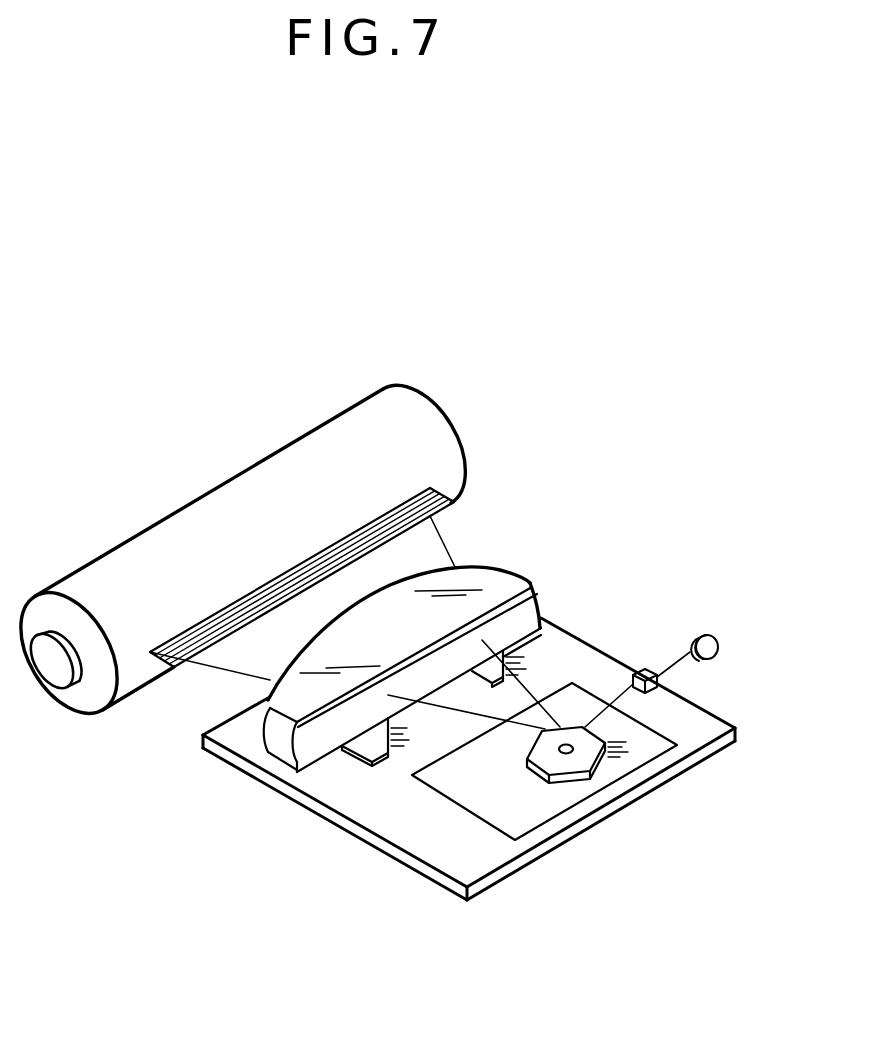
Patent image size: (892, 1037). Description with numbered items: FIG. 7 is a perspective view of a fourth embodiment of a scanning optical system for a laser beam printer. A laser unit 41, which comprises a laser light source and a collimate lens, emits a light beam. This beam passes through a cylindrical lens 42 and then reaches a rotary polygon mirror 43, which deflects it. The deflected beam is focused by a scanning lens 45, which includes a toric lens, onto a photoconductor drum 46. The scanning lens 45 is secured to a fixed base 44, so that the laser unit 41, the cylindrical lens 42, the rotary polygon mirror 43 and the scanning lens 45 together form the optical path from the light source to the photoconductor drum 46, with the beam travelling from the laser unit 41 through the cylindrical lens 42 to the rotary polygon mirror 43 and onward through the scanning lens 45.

The laser unit 41 is at (718, 647).
The cylindrical lens 42 is at (640, 666).
The rotary polygon mirror 43 is at (590, 753).
The fixed base 44 is at (735, 746).
The scanning lens 45 is at (513, 580).
The photoconductor drum 46 is at (455, 438).